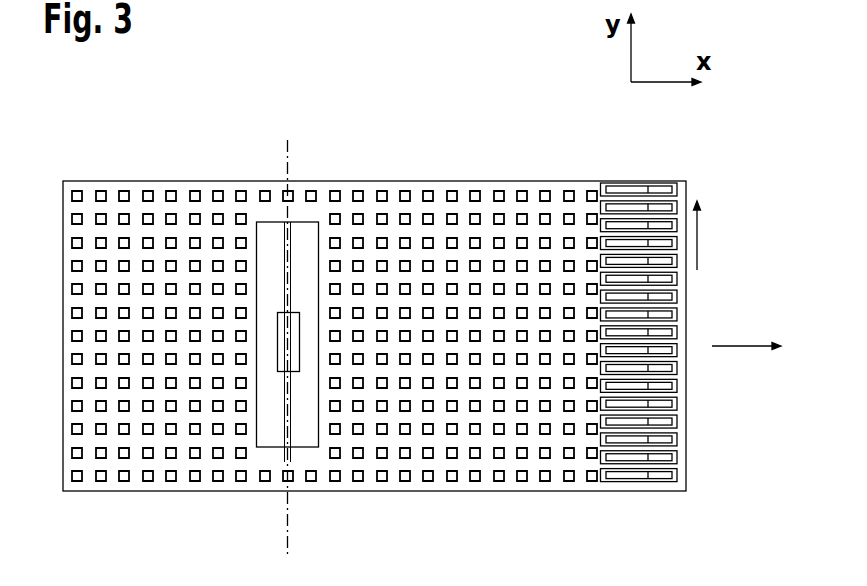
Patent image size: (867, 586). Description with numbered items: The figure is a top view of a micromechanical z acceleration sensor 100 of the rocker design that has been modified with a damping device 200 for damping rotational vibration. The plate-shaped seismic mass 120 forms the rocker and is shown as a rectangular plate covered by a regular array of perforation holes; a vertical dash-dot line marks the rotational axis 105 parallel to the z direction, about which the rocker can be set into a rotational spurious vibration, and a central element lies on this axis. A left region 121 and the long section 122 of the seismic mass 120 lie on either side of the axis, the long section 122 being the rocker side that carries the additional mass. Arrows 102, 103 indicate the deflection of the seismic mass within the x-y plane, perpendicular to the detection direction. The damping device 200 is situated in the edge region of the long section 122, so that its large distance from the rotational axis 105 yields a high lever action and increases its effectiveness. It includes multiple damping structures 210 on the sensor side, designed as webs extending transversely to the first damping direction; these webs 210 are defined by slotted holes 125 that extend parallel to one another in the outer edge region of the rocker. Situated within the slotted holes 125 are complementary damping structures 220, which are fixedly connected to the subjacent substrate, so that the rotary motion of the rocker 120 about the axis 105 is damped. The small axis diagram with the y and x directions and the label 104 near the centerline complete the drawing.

The acceleration sensor 100 is at (706, 493).
The arrow 102 is at (697, 237).
The arrow 103 is at (746, 347).
The center axis 104 is at (287, 150).
The rotational axis 105 is at (288, 340).
The seismic mass 120 is at (300, 375).
The left electrode region 121 is at (138, 495).
The long section 122 is at (457, 494).
The slotted hole 125 is at (677, 455).
The damping device 200 is at (674, 330).
The damping structure 210 is at (653, 466).
The complementary damping structure 220 is at (618, 478).